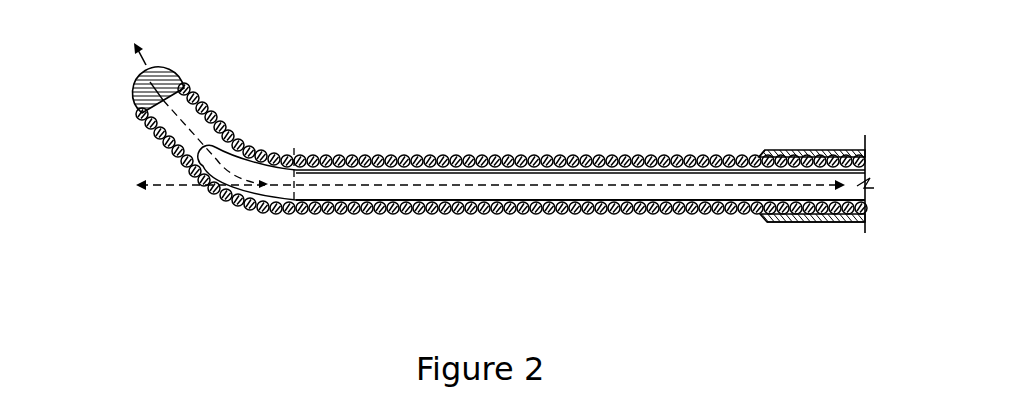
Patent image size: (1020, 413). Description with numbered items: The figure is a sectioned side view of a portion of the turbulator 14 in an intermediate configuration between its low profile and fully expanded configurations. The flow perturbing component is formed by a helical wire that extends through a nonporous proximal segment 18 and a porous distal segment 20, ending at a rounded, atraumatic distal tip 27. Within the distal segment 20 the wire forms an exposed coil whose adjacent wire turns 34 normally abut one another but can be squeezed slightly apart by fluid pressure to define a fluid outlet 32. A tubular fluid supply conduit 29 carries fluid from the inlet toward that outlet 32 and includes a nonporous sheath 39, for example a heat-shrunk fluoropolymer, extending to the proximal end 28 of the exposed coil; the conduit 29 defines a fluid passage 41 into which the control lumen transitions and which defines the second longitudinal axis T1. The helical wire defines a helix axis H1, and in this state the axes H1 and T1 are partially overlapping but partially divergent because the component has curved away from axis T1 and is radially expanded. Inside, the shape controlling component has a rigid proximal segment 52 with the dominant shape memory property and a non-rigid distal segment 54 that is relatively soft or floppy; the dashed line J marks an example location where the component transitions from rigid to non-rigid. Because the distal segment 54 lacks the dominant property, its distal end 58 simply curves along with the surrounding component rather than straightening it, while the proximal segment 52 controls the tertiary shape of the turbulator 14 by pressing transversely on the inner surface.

The distal tip 27 is at (158, 67).
The longitudinal helix axis H1 is at (147, 66).
The distal end of shape controlling component 58 is at (208, 136).
The non-rigid distal segment 54 is at (234, 154).
The dashed line J is at (295, 150).
The turbulator 14 is at (370, 118).
The proximal end of exposed wire coil 28 is at (752, 150).
The nonporous proximal segment 18 is at (798, 146).
The tubular fluid supply conduit 29 is at (764, 220).
The nonporous sheath 39 is at (826, 223).
The fluid passage 41 is at (858, 220).
The wire turns 34 is at (501, 221).
The fluid outlet 32 is at (521, 219).
The porous distal segment 20 is at (598, 223).
The second longitudinal axis T1 is at (176, 187).
The rigid proximal segment 52 is at (380, 193).